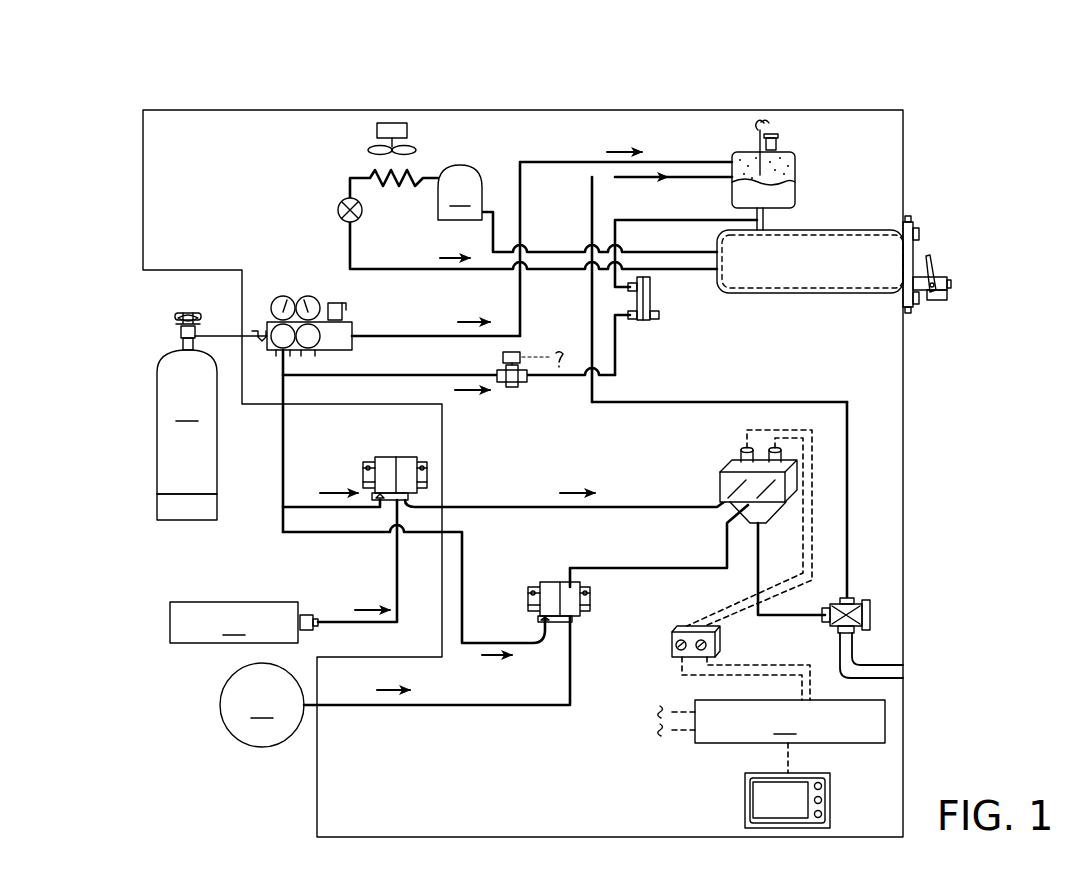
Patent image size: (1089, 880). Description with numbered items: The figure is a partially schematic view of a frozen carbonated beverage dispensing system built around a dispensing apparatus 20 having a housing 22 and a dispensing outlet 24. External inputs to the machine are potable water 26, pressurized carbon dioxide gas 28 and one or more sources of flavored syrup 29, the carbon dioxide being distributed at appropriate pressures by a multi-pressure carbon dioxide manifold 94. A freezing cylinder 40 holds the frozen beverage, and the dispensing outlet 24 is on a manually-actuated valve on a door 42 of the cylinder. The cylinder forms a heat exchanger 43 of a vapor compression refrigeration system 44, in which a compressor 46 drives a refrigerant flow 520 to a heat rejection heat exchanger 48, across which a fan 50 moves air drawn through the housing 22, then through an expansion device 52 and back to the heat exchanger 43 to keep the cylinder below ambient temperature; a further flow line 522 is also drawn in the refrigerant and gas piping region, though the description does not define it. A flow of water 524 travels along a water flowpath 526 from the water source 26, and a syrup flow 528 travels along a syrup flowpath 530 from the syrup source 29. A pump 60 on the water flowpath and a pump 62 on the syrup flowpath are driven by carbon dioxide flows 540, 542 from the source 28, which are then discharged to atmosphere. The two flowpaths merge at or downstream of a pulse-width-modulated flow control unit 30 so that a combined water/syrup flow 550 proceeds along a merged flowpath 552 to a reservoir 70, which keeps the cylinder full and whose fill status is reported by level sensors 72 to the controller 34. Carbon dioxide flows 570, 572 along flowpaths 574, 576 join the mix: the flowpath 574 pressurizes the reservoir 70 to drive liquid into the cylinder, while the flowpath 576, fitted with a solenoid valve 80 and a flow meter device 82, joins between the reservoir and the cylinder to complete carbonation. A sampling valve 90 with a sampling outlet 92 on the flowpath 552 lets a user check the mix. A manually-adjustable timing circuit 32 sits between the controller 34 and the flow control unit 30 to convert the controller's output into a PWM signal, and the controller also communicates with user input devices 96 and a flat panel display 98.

The FCB dispensing apparatus 20 is at (108, 66).
The housing 22 is at (143, 110).
The dispensing outlet 24 is at (950, 318).
The potable water 26 is at (262, 705).
The pressurized carbon dioxide gas 28 is at (212, 416).
The flavored syrup 29 is at (244, 622).
The flow control unit 30 is at (718, 436).
The timing circuit 32 is at (732, 637).
The controller 34 is at (771, 736).
The freezing cylinder 40 is at (783, 302).
The door 42 is at (917, 252).
The heat exchanger 43 is at (722, 300).
The refrigeration system 44 is at (402, 280).
The compressor 46 is at (460, 192).
The heat exchanger 48 is at (392, 190).
The fan 50 is at (428, 132).
The expansion device 52 is at (357, 221).
The pump 60 is at (600, 604).
The pump 62 is at (387, 446).
The reservoir 70 is at (812, 192).
The level sensors 72 is at (765, 173).
The valve 80 is at (528, 347).
The flow meter device 82 is at (640, 328).
The sampling valve 90 is at (877, 592).
The sampling outlet 92 is at (907, 672).
The multi-pressure carbon dioxide manifold 94 is at (298, 290).
The input devices 96 is at (822, 800).
The flat panel display 98 is at (778, 806).
The flow of refrigerant 520 is at (484, 232).
The line 522 is at (570, 282).
The flow of water 524 is at (395, 692).
The water flowpath 526 is at (468, 716).
The syrup flow 528 is at (570, 492).
The syrup flowpath 530 is at (548, 517).
The carbon dioxide flow 540 is at (490, 658).
The carbon dioxide flow 542 is at (330, 492).
The combined water/syrup flow 550 is at (700, 382).
The merged water/syrup flowpath 552 is at (865, 452).
The carbon dioxide flow 570 is at (462, 320).
The carbon dioxide flow 572 is at (470, 392).
The carbon dioxide flowpath 574 is at (403, 342).
The carbon dioxide flowpath 576 is at (565, 395).